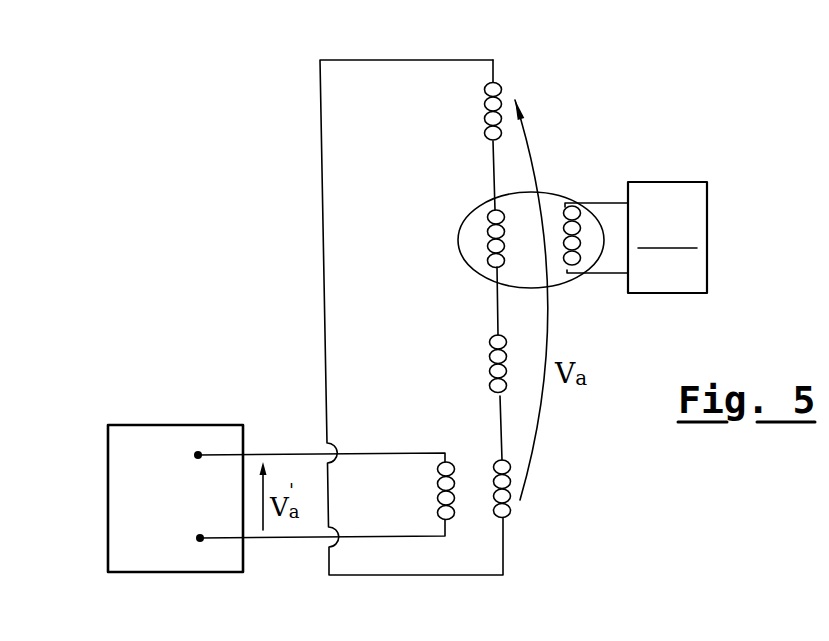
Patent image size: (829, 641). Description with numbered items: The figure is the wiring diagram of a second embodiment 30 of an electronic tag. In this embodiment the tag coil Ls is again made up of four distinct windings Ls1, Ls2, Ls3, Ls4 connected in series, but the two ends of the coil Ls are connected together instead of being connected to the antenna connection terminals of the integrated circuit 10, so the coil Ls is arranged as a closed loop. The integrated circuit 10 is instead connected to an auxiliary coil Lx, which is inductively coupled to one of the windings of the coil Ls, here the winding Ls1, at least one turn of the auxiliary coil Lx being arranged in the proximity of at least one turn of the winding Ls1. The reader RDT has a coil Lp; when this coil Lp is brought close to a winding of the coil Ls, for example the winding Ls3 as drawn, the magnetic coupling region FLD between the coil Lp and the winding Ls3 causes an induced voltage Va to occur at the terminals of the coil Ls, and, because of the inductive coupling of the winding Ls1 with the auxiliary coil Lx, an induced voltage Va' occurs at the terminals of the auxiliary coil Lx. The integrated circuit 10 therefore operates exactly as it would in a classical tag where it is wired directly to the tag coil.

The integrated circuit 10 is at (120, 468).
The embodiment of the tag 30 is at (187, 148).
The coil Ls is at (458, 59).
The winding Ls1 is at (510, 513).
The winding Ls2 is at (490, 370).
The winding Ls3 is at (487, 232).
The winding Ls4 is at (486, 128).
The auxiliary coil Lx is at (437, 480).
The coil of the reader Lp is at (582, 263).
The magnetic field coupling FLD is at (555, 192).
The reader RDT is at (667, 237).